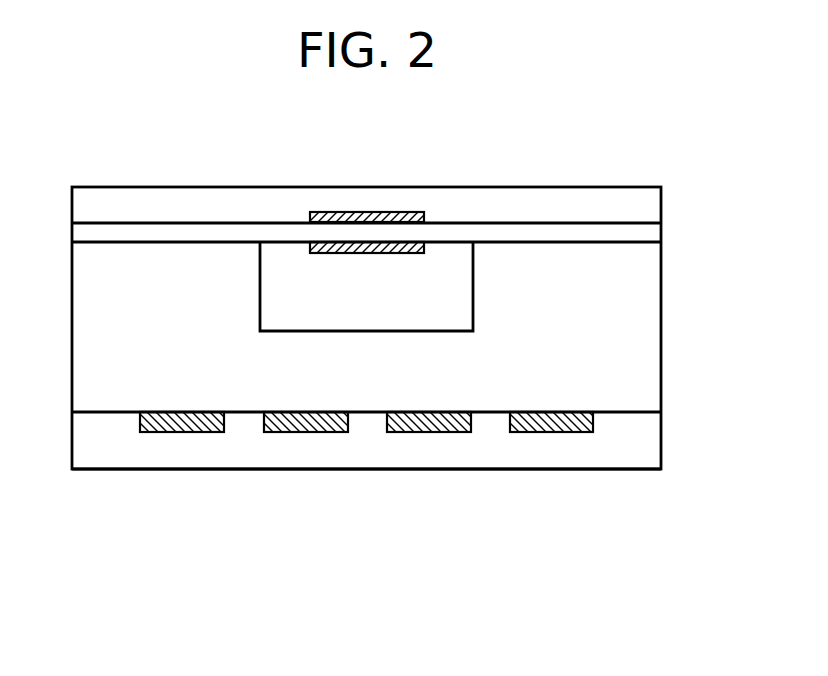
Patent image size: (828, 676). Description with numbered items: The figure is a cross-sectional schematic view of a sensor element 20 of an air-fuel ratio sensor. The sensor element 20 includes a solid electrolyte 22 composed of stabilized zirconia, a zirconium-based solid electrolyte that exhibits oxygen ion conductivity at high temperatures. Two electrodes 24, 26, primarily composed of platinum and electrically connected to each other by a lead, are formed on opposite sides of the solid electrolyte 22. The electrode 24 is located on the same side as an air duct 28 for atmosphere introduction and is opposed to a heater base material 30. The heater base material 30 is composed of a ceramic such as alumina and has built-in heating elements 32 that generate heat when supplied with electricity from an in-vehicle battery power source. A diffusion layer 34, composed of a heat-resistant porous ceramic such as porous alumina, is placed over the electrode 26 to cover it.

The sensor element 20 is at (543, 516).
The solid electrolyte 22 is at (547, 242).
The electrode 24 is at (424, 244).
The electrode 26 is at (424, 216).
The air duct 28 is at (373, 312).
The heater base material 30 is at (612, 412).
The heating elements 32 is at (551, 432).
The diffusion layer 34 is at (563, 187).